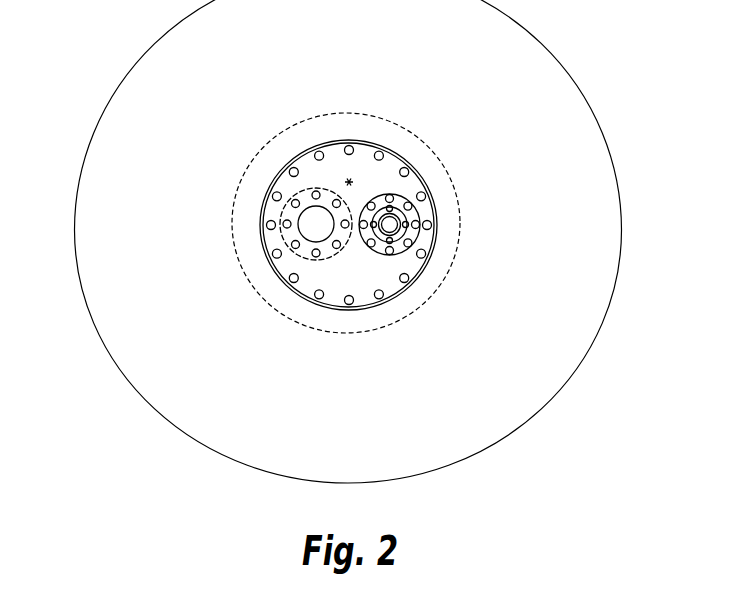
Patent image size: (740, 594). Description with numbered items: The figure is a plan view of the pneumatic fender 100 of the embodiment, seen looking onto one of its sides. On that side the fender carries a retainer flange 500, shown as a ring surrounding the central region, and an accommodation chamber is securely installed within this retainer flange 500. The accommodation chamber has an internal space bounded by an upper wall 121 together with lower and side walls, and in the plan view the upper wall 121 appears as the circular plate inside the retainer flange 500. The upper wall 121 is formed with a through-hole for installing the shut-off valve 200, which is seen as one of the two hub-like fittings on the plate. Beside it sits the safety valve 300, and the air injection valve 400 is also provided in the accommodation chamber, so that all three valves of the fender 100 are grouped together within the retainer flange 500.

The pneumatic fender 100 is at (533, 428).
The upper wall 121 is at (381, 181).
The shut-off valve 200 is at (426, 233).
The safety valve 300 is at (274, 235).
The air injection valve 400 is at (346, 182).
The retainer flange 500 is at (432, 309).